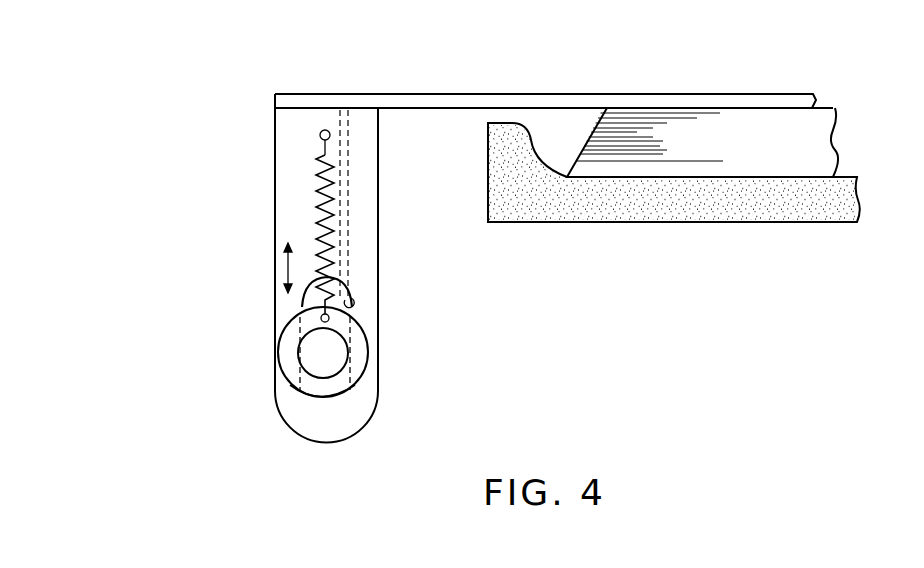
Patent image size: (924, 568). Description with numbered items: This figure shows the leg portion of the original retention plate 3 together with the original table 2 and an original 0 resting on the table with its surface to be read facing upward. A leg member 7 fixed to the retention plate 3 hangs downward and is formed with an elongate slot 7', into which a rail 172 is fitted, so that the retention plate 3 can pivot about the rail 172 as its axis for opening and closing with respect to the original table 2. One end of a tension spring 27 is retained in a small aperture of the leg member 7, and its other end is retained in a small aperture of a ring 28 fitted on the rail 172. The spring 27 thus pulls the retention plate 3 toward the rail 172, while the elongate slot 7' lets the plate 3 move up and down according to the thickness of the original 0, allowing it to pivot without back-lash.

The leg member 7 is at (526, 268).
The tension spring 27 is at (316, 213).
The slot 7' is at (364, 292).
The ring 28 is at (290, 358).
The rail 172 is at (335, 355).
The original retention plate 3 is at (497, 93).
The original 0 is at (830, 140).
The original table 2 is at (716, 213).